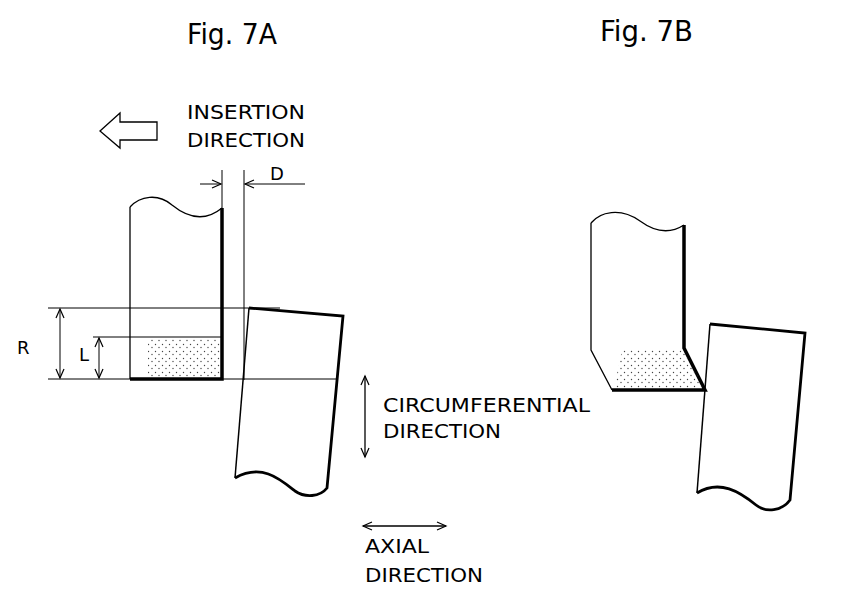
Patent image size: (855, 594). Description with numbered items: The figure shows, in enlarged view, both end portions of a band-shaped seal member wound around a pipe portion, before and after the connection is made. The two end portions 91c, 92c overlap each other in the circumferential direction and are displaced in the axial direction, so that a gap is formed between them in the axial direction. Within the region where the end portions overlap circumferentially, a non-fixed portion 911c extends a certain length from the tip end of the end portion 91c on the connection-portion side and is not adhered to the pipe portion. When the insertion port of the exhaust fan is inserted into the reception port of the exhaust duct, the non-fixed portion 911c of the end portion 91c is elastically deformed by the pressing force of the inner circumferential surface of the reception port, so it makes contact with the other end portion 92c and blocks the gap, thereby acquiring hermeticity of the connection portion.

In FIG. 7A, the end portion 91c is at (110, 255).
In FIG. 7B, the end portion 91c is at (580, 308).
In FIG. 7A, the non-fixed portion 911c is at (158, 358).
In FIG. 7B, the non-fixed portion 911c is at (630, 372).
In FIG. 7A, the end portion 92c is at (300, 302).
In FIG. 7B, the end portion 92c is at (762, 313).